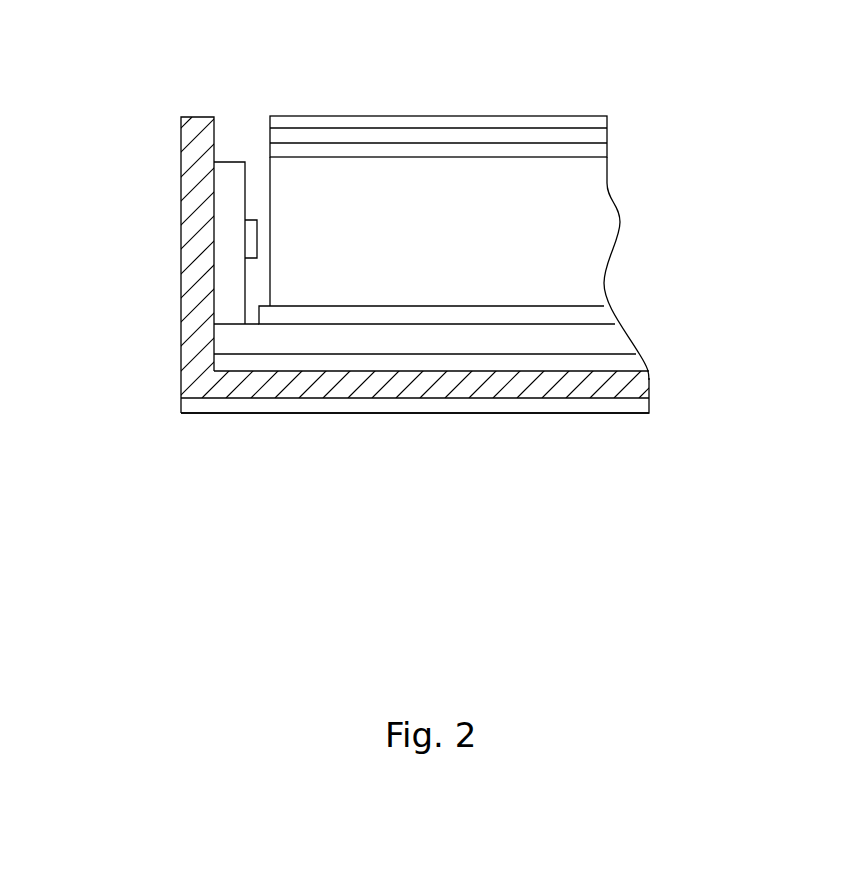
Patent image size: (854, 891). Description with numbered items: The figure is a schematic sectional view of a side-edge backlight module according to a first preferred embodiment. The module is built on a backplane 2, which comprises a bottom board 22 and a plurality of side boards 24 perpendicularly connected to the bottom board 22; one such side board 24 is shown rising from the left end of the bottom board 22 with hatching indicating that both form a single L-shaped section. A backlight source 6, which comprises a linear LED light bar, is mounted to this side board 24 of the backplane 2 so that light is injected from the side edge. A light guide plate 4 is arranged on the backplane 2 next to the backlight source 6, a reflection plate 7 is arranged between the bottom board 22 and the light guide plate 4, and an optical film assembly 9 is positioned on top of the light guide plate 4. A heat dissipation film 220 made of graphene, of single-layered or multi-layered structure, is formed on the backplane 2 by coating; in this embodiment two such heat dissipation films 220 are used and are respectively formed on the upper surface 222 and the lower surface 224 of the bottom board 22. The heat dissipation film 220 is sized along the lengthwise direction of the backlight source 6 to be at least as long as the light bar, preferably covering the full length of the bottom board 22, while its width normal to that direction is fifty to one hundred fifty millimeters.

The backplane 2 is at (427, 326).
The bottom board 22 is at (427, 320).
The side board 24 is at (192, 288).
The heat dissipation film 220 is at (420, 403).
The upper surface 222 is at (595, 368).
The lower surface 224 is at (431, 456).
The light guide plate 4 is at (568, 232).
The backlight source 6 is at (232, 190).
The reflection plate 7 is at (577, 318).
The optical film assembly 9 is at (474, 136).